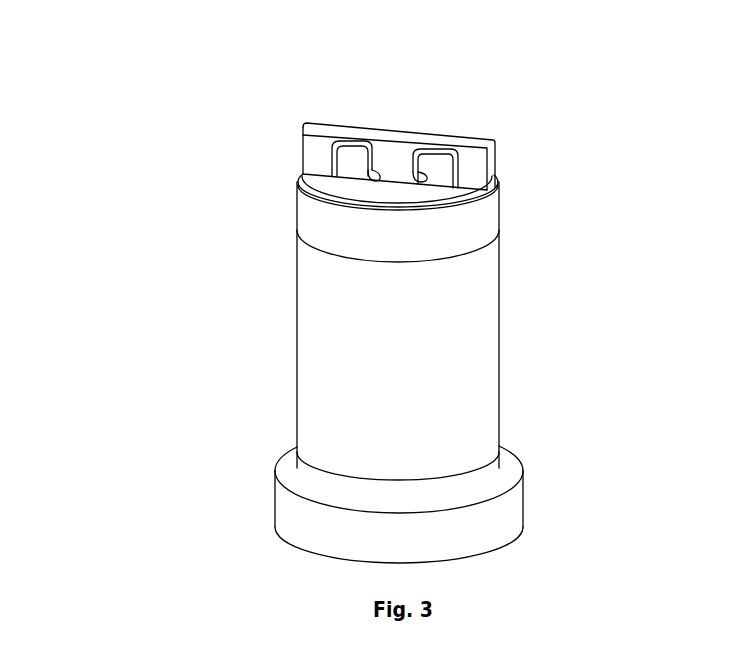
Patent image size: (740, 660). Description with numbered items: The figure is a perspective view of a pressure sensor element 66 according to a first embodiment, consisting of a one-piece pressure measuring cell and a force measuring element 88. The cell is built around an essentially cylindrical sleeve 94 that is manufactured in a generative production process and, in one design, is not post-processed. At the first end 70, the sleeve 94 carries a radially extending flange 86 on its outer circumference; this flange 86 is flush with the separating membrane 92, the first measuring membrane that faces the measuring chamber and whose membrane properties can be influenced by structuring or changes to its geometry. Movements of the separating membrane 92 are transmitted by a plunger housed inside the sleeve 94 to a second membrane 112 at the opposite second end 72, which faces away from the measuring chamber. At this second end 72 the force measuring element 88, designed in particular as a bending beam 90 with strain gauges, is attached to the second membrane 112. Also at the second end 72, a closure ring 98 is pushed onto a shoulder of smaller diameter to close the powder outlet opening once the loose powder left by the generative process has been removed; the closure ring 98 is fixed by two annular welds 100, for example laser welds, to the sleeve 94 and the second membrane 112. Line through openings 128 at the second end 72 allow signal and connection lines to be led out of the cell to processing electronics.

The pressure sensor element 66 is at (155, 60).
The first end 70 is at (243, 511).
The second end 72 is at (268, 178).
The flange 86 is at (503, 513).
The force measuring element 88 is at (392, 156).
The bending beam 90 is at (472, 165).
The separating membrane 92 is at (490, 555).
The sleeve 94 is at (467, 360).
The closure ring 98 is at (322, 217).
The annular welds 100 is at (468, 250).
The second membrane 112 is at (345, 182).
The line through openings 128 is at (423, 177).